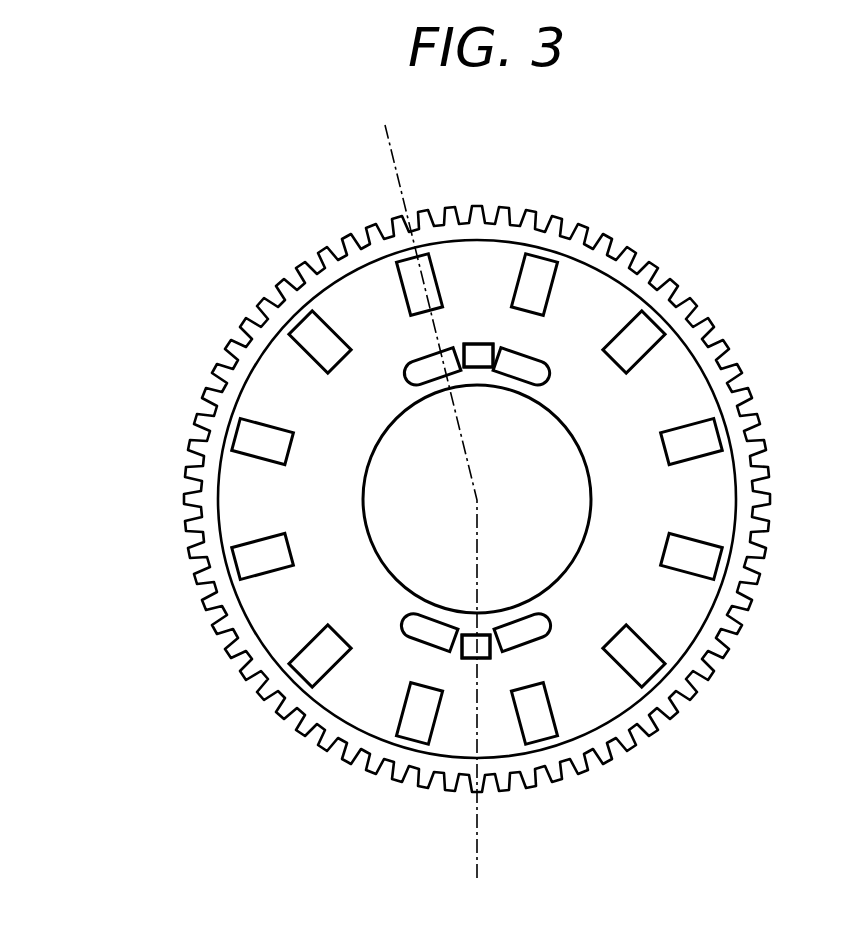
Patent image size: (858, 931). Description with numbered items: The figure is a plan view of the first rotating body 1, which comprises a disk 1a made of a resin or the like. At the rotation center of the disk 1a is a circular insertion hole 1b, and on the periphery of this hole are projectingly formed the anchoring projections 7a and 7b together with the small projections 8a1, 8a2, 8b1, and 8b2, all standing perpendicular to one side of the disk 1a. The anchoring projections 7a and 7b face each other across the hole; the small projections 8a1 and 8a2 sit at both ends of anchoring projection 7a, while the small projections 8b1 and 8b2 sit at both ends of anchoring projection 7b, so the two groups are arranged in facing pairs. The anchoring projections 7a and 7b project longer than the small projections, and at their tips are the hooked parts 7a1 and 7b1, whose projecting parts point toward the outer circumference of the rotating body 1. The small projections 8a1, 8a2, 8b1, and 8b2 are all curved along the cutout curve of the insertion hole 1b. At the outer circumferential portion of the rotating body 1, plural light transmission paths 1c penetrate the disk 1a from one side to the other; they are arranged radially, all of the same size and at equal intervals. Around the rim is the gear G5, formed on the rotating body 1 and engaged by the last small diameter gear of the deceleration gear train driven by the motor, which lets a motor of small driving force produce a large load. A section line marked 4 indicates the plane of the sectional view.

The rotating body 1 is at (740, 305).
The disk 1a is at (710, 487).
The insertion hole 1b is at (386, 456).
The light transmission paths 1c is at (708, 437).
The anchoring projection 7a is at (483, 368).
The hooked part 7a1 is at (478, 343).
The anchoring projection 7b is at (482, 634).
The hooked part 7b1 is at (478, 659).
The small projection 8a1 is at (531, 366).
The small projection 8a2 is at (417, 363).
The small projection 8b1 is at (540, 633).
The small projection 8b2 is at (412, 648).
The gear G5 is at (740, 637).
The section line 4- 4 is at (385, 123).